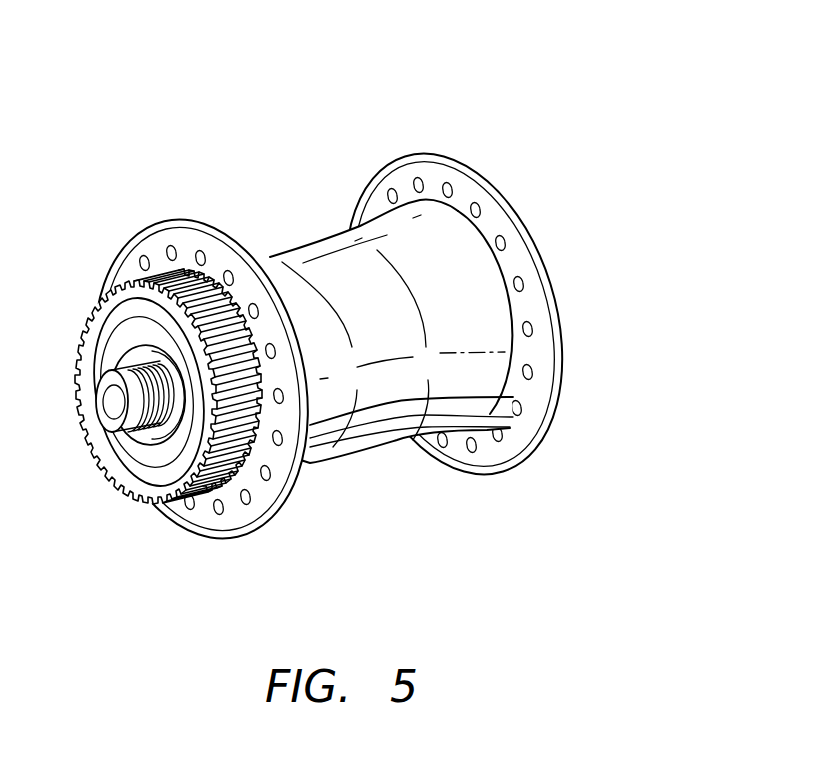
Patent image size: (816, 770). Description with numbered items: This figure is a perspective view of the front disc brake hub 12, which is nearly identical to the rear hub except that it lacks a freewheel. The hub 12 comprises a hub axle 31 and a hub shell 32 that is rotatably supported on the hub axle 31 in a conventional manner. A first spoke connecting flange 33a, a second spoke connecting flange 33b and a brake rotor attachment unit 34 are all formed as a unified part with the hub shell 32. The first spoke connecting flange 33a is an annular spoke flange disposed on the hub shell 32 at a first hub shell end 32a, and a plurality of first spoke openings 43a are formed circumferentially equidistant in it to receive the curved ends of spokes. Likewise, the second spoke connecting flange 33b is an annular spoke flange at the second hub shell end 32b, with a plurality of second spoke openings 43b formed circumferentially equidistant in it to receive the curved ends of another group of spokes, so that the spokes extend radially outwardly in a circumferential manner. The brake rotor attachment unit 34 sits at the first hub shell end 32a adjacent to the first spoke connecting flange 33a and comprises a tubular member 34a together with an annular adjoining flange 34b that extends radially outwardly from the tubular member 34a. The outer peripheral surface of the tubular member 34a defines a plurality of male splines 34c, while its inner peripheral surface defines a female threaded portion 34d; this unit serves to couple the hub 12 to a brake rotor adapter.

The front disc brake hub 12 is at (351, 315).
The hub axle 31 is at (113, 395).
The hub shell 32 is at (285, 182).
The first hub shell end 32a is at (222, 228).
The second hub shell end 32b is at (503, 313).
The first spoke connecting flange 33a is at (220, 369).
The second spoke connecting flange 33b is at (493, 313).
The brake rotor attachment unit 34 is at (149, 340).
The tubular member 34a is at (115, 460).
The annular adjoining flange 34b is at (193, 272).
The male splines 34c is at (200, 490).
The female threaded portion 34d is at (100, 300).
The first spoke openings 43a is at (288, 440).
The second spoke openings 43b is at (527, 377).